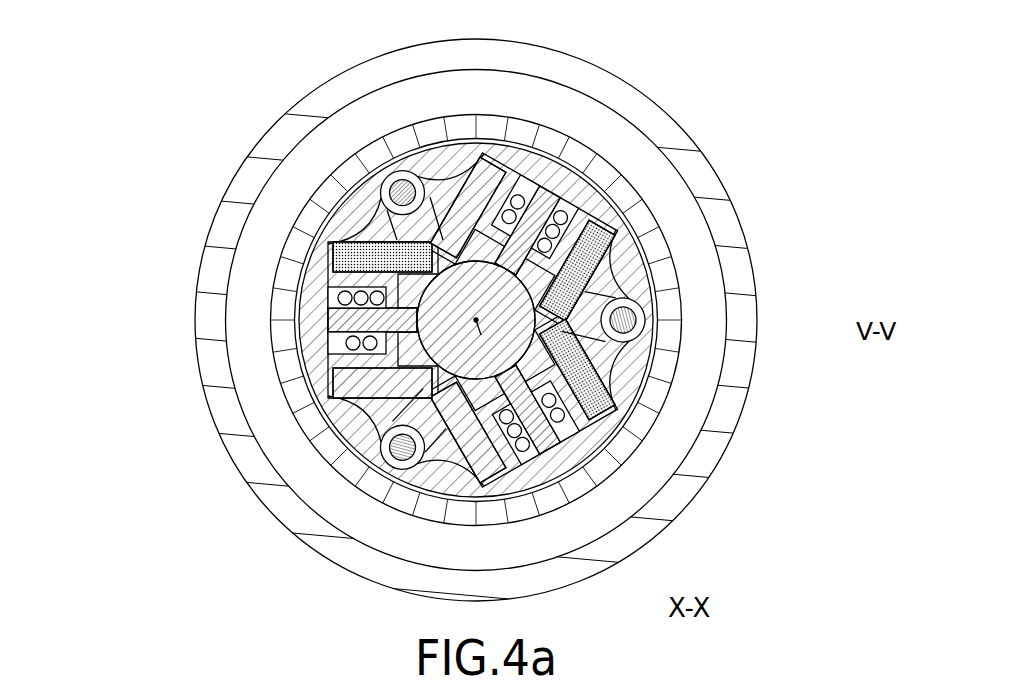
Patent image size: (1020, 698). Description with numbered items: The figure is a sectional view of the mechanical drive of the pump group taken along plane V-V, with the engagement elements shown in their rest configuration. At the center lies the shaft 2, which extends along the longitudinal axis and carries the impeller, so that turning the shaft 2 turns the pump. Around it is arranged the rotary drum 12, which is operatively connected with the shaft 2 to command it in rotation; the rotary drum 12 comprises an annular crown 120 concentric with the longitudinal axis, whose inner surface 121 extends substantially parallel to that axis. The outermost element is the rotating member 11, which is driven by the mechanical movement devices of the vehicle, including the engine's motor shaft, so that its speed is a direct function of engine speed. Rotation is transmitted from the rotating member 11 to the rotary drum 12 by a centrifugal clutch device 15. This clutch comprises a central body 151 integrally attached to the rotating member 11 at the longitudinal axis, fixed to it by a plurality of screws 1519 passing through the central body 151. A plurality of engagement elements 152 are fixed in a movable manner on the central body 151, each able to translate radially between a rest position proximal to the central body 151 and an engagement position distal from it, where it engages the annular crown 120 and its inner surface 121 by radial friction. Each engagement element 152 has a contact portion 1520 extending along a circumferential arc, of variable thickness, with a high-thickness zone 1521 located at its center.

The shaft 2 is at (438, 297).
The rotating member 11 is at (707, 155).
The rotary drum 12 is at (686, 276).
The centrifugal clutch device 15 is at (431, 501).
The central body 151 is at (413, 427).
The engagement element 152 is at (311, 409).
The annular crown 120 is at (396, 148).
The inner surface 121 is at (378, 192).
The screws 1519 is at (481, 162).
The contact portion 1520 is at (296, 341).
The high-thickness zone 1521 is at (313, 312).